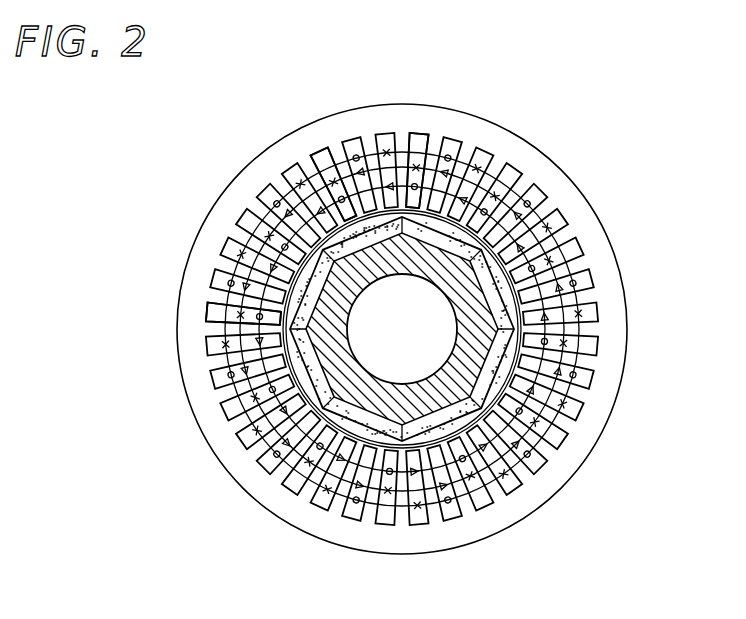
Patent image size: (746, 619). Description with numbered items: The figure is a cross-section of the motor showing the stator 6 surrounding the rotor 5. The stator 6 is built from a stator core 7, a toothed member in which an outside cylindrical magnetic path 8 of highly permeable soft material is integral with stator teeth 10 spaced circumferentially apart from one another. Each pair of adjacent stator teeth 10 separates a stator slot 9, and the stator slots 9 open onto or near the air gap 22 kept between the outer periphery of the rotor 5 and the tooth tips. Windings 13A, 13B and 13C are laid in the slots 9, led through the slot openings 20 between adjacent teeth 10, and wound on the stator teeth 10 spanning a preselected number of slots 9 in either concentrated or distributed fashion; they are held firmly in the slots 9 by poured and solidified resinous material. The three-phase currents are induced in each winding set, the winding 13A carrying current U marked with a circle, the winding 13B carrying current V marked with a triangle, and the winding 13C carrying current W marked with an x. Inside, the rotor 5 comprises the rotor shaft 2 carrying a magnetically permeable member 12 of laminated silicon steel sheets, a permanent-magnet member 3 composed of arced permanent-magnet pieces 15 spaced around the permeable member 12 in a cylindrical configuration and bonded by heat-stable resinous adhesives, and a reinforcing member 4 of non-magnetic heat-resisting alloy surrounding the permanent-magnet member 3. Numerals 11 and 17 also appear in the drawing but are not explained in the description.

The rotor shaft 2 is at (395, 344).
The permanent-magnet member 3 is at (346, 404).
The reinforcing member 4 is at (425, 522).
The rotor 5 is at (524, 311).
The stator 6 is at (590, 197).
The stator core 7 is at (593, 232).
The cylindrical magnetic path 8 is at (198, 360).
The stator slots 9 is at (297, 208).
The stator teeth 10 is at (235, 300).
The third phase coil 11 is at (505, 190).
The magnetically permeable member 12 is at (390, 263).
The winding 13A is at (433, 134).
The winding 13B is at (530, 200).
The winding 13C is at (588, 278).
The permanent-magnet pieces 15 is at (352, 307).
The stator tooth 17 is at (502, 405).
The slot openings 20 is at (400, 214).
The air gap 22 is at (343, 472).